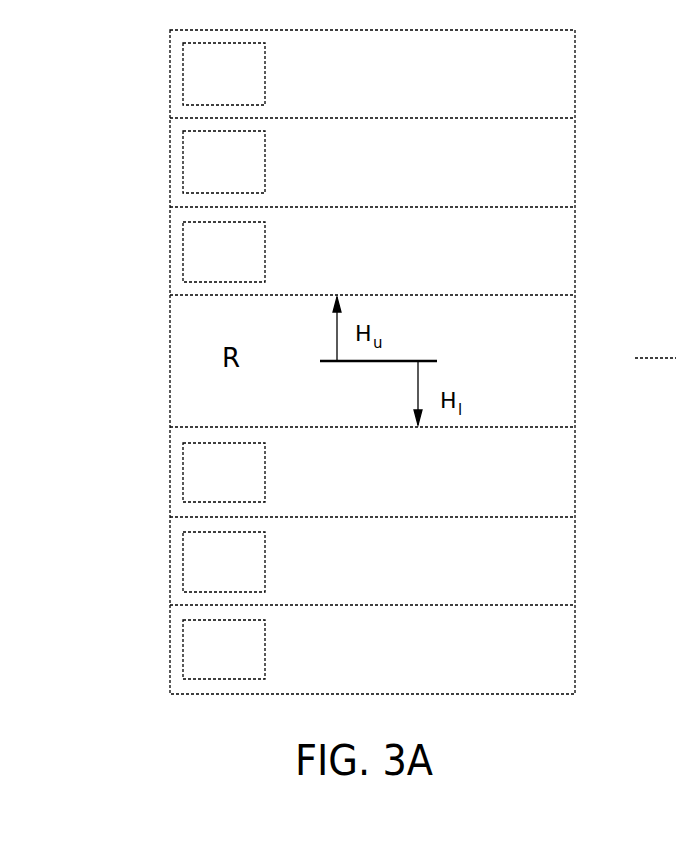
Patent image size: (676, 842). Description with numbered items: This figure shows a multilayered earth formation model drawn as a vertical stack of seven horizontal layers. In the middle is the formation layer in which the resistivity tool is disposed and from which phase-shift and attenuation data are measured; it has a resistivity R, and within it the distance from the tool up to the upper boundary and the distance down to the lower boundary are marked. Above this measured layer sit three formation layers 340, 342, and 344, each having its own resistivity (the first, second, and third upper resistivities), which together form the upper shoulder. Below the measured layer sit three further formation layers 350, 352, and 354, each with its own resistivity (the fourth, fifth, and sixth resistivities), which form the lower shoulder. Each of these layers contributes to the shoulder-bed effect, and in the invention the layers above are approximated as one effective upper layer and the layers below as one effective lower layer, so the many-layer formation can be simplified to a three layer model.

The formation layer 344 is at (170, 65).
The formation layer 342 is at (170, 155).
The formation layer 340 is at (170, 240).
The formation layer 350 is at (170, 463).
The formation layer 352 is at (170, 553).
The formation layer 354 is at (170, 641).